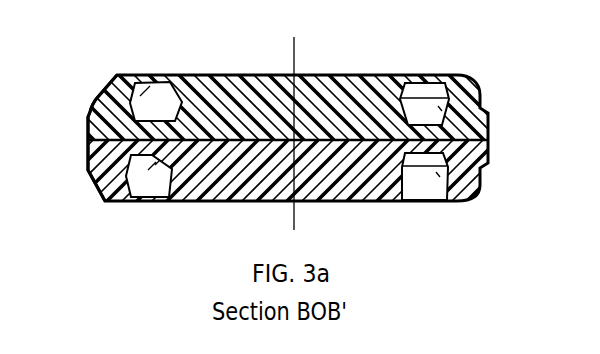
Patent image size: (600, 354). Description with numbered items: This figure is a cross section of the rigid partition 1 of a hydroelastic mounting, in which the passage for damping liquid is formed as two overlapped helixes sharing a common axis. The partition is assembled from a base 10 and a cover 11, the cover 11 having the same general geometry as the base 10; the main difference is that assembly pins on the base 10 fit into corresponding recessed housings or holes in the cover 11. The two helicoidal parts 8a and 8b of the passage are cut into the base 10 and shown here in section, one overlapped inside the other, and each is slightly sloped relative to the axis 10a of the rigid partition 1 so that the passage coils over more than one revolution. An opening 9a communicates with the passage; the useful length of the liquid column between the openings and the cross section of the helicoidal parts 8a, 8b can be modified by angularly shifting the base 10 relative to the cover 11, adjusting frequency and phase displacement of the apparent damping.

The rigid partition 1 is at (294, 132).
The base 10 is at (104, 183).
The axis 10a is at (294, 52).
The cover 11 is at (97, 96).
The helicoidal part 8a is at (428, 92).
The helicoidal part 8b is at (161, 98).
The opening 9a is at (420, 184).